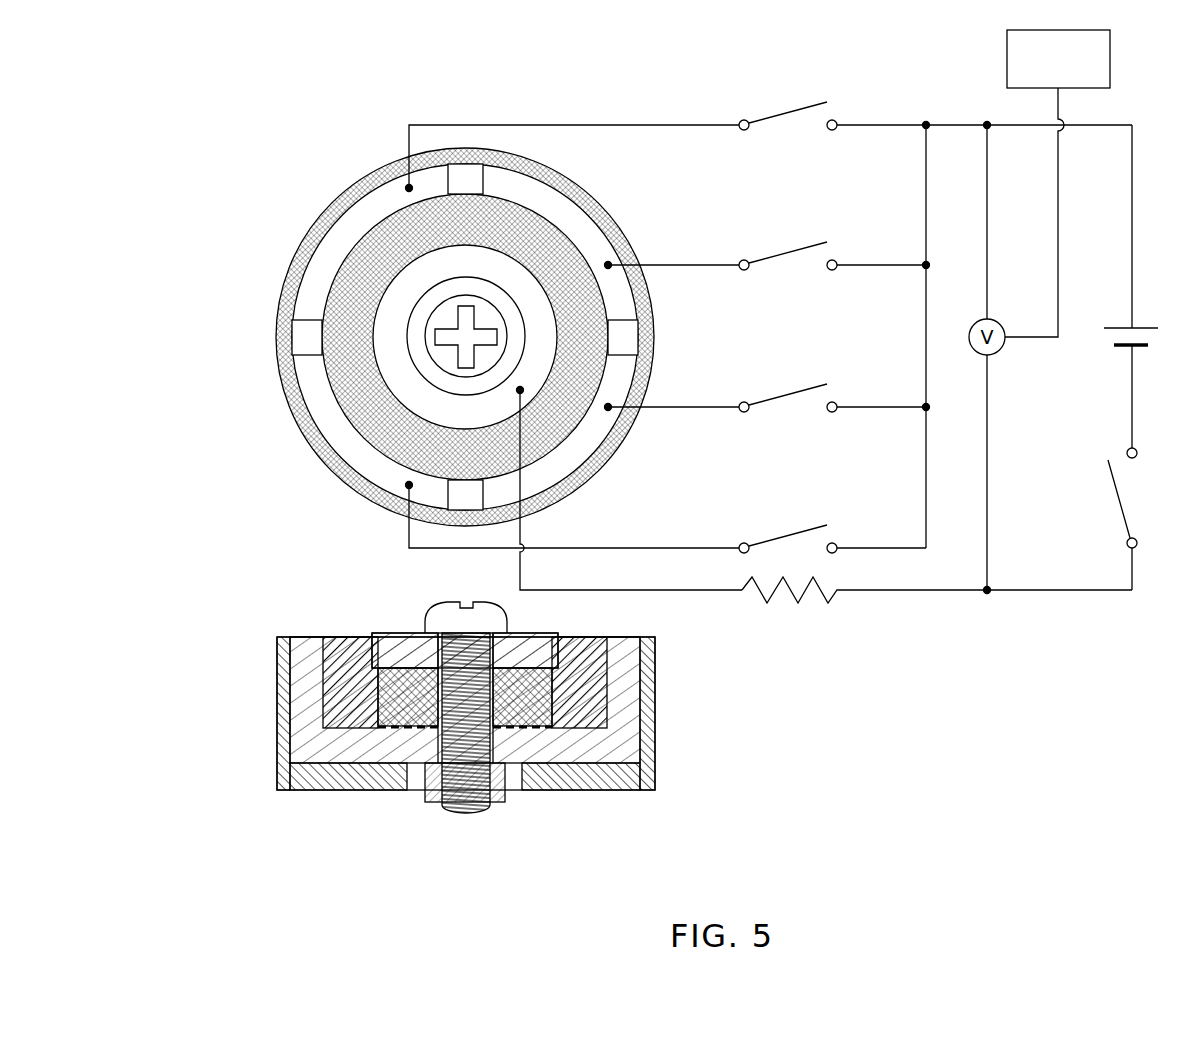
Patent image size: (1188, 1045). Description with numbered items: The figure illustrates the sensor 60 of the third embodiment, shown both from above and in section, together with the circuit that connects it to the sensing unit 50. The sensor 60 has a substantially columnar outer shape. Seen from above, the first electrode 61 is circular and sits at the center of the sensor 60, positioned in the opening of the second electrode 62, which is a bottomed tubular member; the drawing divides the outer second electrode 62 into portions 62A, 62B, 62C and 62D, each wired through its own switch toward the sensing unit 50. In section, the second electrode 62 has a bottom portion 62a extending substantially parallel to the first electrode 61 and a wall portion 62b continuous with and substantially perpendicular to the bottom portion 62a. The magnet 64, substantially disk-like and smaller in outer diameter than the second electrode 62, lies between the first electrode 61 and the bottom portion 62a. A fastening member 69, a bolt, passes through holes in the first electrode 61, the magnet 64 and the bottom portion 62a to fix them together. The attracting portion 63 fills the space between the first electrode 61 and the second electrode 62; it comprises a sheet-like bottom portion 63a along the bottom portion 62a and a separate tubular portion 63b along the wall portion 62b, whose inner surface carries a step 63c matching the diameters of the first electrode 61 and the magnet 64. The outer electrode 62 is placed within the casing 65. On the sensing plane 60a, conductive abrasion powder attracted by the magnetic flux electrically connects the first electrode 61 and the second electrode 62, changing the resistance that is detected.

The sensing unit 50 is at (1058, 59).
The sensor 60 is at (404, 467).
The sensing plane 60a is at (572, 637).
The first electrode 61 is at (400, 378).
The second electrode 62 is at (445, 337).
The second electrode segment 62A is at (338, 236).
The second electrode segment 62B is at (568, 216).
The second electrode segment 62C is at (565, 460).
The second electrode segment 62D is at (365, 458).
The bottom portion 62a is at (305, 765).
The wall portion 62b is at (297, 650).
The attracting portion 63 is at (325, 345).
The bottom portion 63a is at (412, 765).
The tubular portion 63b is at (372, 728).
The step 63c is at (397, 658).
The magnet 64 is at (538, 790).
The casing 65 is at (605, 790).
The fastening member 69 is at (455, 602).